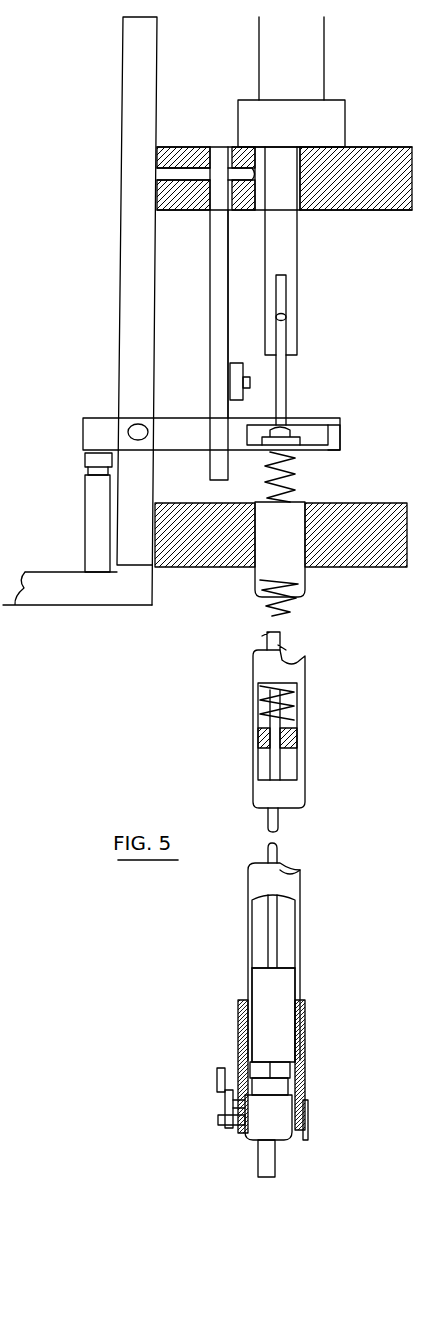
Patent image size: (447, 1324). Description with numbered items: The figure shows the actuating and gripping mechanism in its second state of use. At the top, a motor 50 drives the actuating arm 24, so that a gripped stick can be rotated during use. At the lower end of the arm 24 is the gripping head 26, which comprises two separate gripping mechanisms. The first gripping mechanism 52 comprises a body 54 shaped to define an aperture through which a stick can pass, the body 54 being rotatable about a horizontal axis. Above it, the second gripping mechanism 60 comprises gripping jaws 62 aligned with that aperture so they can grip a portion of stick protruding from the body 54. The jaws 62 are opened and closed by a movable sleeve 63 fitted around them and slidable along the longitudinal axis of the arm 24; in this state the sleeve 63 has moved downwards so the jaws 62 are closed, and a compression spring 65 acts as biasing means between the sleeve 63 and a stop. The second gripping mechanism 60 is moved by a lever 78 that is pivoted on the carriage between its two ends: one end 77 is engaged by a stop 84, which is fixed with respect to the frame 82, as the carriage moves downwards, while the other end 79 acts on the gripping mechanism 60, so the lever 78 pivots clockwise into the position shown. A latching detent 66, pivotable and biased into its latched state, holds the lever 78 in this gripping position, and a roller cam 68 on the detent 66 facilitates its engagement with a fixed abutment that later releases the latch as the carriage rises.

The actuating arm 24 is at (342, 818).
The gripping head 26 is at (345, 1003).
The motor 50 is at (335, 122).
The first gripping mechanism 52 is at (236, 1143).
The body 54 is at (280, 1125).
The second gripping mechanism 60 is at (278, 1040).
The gripping jaws 62 is at (250, 1068).
The movable sleeve 63 is at (270, 985).
The spring 65 is at (282, 712).
The latching detent 66 is at (210, 284).
The roller cam 68 is at (235, 366).
The one end of lever 77 is at (95, 432).
The lever 78 is at (330, 448).
The other end of lever 79 is at (335, 422).
The frame 82 is at (97, 602).
The stop 84 is at (95, 516).